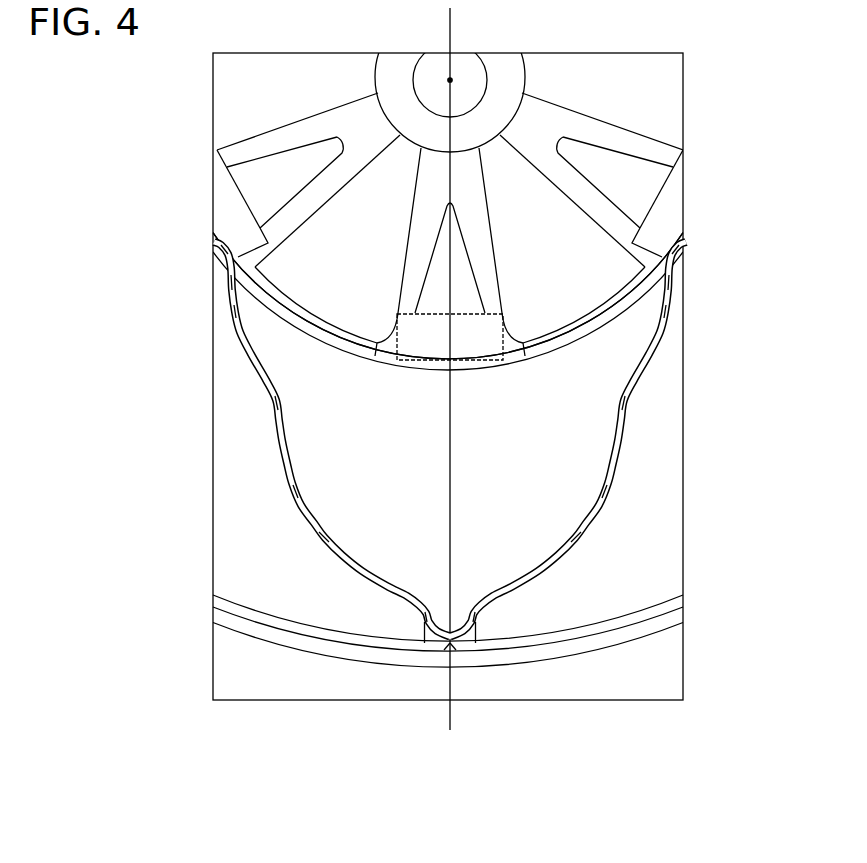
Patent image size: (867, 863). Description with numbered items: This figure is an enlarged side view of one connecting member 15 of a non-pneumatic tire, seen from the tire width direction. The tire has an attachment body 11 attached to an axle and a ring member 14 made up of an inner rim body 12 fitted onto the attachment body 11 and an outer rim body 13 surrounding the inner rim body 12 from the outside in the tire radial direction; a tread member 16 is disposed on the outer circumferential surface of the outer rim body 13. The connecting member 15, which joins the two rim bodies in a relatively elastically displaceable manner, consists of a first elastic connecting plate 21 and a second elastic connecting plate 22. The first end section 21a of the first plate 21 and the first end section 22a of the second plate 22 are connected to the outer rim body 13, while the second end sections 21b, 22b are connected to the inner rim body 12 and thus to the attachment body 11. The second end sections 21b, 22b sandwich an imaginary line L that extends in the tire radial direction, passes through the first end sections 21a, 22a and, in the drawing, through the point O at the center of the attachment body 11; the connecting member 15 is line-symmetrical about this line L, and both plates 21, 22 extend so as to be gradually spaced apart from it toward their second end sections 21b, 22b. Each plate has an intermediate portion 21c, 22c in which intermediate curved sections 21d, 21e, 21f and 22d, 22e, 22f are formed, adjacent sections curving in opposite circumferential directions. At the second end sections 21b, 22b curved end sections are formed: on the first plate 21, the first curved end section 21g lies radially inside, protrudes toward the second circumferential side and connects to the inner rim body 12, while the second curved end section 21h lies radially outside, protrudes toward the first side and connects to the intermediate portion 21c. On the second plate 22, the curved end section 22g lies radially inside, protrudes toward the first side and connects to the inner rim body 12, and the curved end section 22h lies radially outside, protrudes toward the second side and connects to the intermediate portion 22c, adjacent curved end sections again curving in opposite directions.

The attachment body 11 is at (605, 114).
The inner rim body 12 is at (278, 324).
The outer rim body 13 is at (254, 628).
The ring member 14 is at (651, 623).
The connecting member 15 is at (450, 540).
The tread member 16 is at (618, 640).
The first elastic connecting plate 21 is at (357, 583).
The second elastic connecting plate 22 is at (568, 519).
The first end section 21a is at (450, 643).
The second end section 21b is at (227, 258).
The intermediate portion 21c is at (306, 541).
The intermediate curved section 21d is at (301, 512).
The intermediate curved section 21e is at (414, 612).
The intermediate curved section 21f is at (276, 405).
The first curved end section 21g is at (233, 283).
The second curved end section 21h is at (228, 310).
The first end section 22a is at (450, 643).
The second end section 22b is at (673, 258).
The intermediate portion 22c is at (594, 545).
The intermediate curved section 22d is at (599, 512).
The intermediate curved section 22e is at (486, 612).
The intermediate curved section 22f is at (624, 405).
The second curved end section 22g is at (667, 283).
The second curved end section 22h is at (672, 310).
The center O is at (448, 78).
The imaginary line L is at (460, 40).